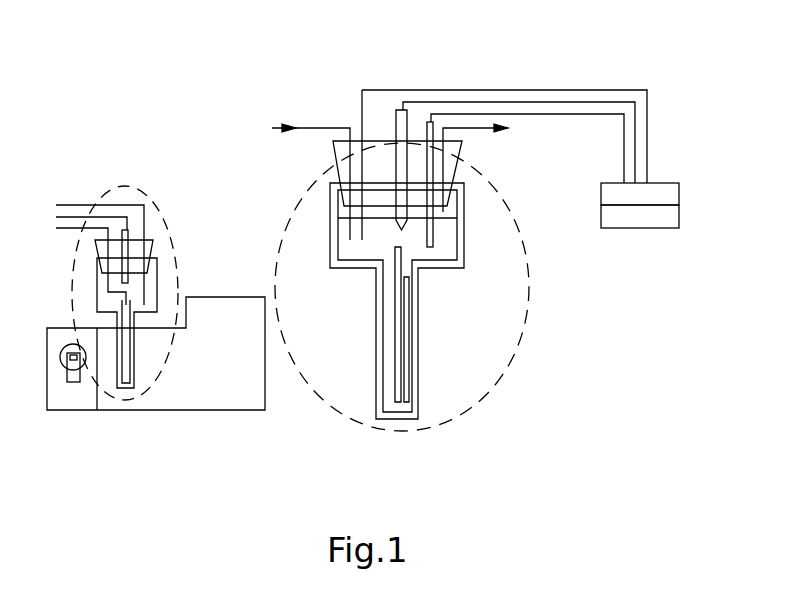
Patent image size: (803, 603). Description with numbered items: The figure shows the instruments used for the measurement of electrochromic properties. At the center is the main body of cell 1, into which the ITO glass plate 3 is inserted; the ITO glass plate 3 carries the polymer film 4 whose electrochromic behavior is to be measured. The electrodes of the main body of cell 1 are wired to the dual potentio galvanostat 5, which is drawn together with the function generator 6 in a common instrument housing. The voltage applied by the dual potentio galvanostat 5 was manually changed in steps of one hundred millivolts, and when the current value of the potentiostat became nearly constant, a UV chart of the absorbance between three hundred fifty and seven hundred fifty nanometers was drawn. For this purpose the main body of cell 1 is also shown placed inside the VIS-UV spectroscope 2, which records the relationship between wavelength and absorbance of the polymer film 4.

The main body of cell 1 is at (300, 253).
The VIS-UV spectroscope 2 is at (108, 409).
The ITO glass plate 3 is at (397, 375).
The polymer film 4 is at (403, 343).
The dual potentio galvanostat 5 is at (660, 187).
The function generator 6 is at (618, 216).